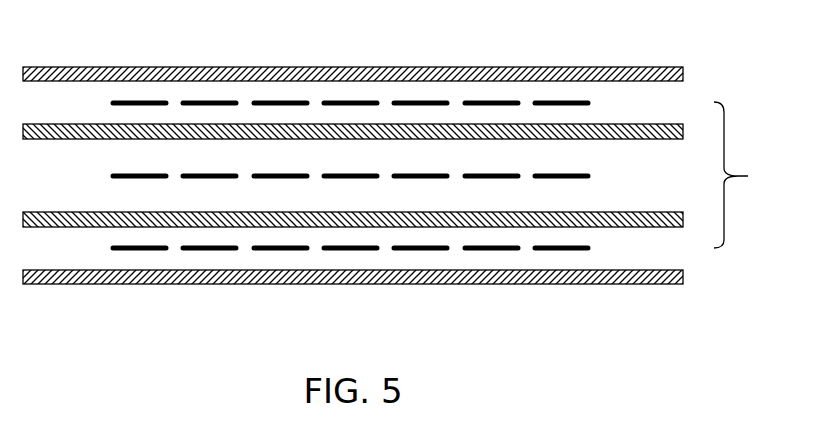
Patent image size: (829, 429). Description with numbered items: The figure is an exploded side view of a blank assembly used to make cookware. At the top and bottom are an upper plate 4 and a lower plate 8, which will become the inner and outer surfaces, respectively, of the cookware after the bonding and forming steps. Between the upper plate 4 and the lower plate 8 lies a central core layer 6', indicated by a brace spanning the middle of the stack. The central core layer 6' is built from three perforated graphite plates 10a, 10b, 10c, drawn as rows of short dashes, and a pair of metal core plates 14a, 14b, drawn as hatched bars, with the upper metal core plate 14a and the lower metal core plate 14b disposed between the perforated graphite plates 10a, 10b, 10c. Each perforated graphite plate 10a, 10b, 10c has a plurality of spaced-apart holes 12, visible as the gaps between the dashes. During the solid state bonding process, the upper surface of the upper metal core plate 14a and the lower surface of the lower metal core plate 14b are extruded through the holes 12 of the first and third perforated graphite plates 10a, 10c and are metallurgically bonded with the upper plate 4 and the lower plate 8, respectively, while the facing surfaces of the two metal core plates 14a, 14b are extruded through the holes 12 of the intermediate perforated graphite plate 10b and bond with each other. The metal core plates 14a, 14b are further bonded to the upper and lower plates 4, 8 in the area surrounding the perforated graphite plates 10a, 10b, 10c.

The upper plate 4 is at (637, 79).
The lower plate 8 is at (645, 284).
The upper metal core plate 14a is at (662, 124).
The lower metal core plate 14b is at (655, 227).
The first perforated graphite plate 10a is at (572, 100).
The intermediate perforated graphite plate 10b is at (589, 173).
The third perforated graphite plate 10c is at (560, 251).
The holes 12 is at (522, 102).
The central core layer 6' is at (750, 175).